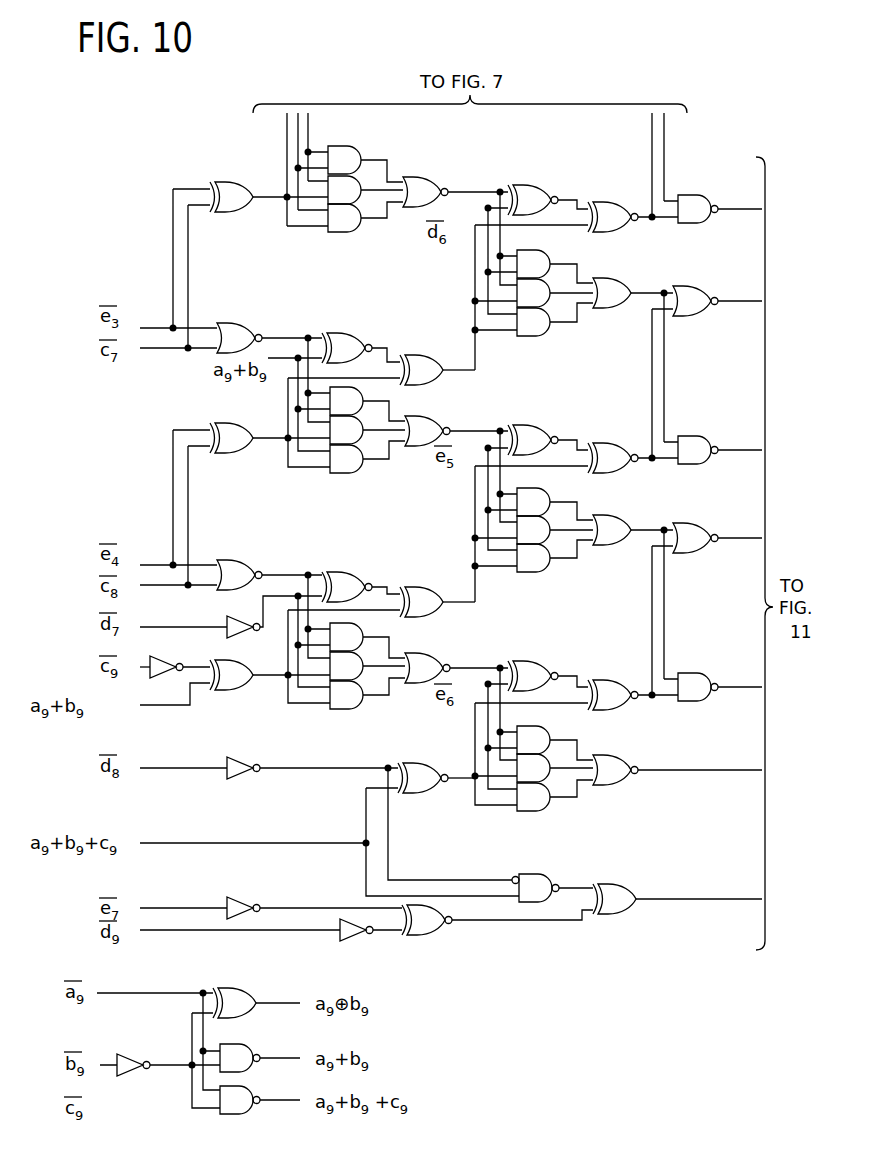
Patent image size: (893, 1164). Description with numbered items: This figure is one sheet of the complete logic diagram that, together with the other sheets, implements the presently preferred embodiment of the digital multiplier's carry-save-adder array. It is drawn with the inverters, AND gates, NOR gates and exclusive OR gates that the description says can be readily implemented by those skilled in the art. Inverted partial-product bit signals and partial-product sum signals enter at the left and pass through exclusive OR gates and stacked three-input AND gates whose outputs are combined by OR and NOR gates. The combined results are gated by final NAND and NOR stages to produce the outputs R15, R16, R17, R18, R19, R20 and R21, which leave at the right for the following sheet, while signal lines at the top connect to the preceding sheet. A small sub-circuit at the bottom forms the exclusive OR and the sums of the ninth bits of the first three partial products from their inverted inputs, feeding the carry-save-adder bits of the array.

The output R15 NAND gate R15 is at (720, 218).
The output R16 NOR gate R16 is at (717, 310).
The output R17 NAND gate R17 is at (720, 459).
The output R18 NOR gate R18 is at (717, 546).
The output R19 NAND gate R19 is at (720, 696).
The output R20 NOR gate R20 is at (677, 778).
The output R21 XOR gate R21 is at (677, 907).